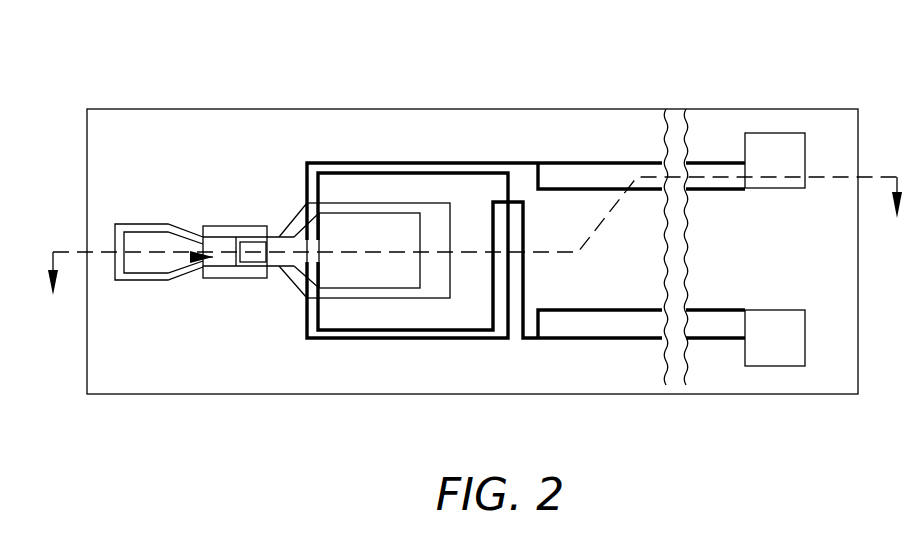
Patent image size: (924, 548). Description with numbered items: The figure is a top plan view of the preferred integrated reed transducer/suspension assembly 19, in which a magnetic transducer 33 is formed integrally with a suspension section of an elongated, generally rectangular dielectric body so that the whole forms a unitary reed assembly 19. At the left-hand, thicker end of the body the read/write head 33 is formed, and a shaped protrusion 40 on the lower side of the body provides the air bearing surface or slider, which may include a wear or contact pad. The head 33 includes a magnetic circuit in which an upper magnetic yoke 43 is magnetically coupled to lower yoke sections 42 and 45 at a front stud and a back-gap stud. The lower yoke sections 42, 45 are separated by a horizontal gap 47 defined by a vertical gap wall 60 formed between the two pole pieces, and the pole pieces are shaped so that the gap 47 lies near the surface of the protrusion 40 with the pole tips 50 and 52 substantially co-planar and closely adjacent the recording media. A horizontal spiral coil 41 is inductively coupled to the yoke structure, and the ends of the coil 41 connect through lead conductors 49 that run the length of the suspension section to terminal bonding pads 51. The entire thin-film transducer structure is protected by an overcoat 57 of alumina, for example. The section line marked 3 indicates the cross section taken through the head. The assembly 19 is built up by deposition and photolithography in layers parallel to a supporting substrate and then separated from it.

The integrated reed transducer/suspension assembly 19 is at (128, 421).
The transducer 33 is at (160, 92).
The overcoat 57 is at (130, 310).
The section line 3- 3 is at (478, 253).
The lower yoke section 42 is at (152, 225).
The pole tip 50 is at (224, 247).
The vertical gap wall 60 is at (234, 243).
The pole tip 52 is at (246, 245).
The horizontal gap 47 is at (200, 257).
The shaped protrusion 40 is at (232, 290).
The upper magnetic yoke 43 is at (290, 272).
The lower yoke section 45 is at (362, 207).
The horizontal spiral coil 41 is at (476, 135).
The lead conductors 49 is at (710, 160).
The terminal bonding pads 51 is at (775, 140).